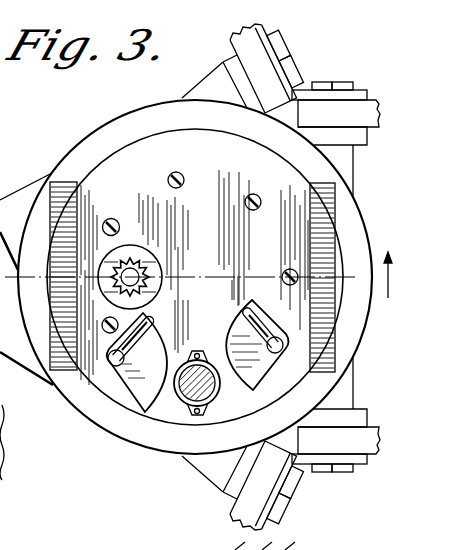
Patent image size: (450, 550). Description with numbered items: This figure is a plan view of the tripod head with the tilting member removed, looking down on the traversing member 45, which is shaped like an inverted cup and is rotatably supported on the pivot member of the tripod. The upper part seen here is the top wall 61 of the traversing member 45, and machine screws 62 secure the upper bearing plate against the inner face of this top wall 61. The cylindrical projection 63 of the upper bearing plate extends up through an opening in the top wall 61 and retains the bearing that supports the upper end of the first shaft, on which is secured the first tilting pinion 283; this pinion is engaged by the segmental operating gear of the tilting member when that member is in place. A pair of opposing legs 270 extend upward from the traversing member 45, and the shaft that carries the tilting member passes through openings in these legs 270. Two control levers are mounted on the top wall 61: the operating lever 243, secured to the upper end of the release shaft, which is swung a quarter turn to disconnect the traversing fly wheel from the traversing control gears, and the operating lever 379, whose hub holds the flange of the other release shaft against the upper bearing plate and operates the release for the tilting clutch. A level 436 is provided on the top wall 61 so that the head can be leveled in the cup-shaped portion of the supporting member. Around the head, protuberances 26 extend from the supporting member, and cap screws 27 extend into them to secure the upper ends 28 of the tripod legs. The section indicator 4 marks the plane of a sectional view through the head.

The section line for FIG. 4 is at (391, 276).
The protuberances 26 is at (206, 78).
The cap screws 27 is at (320, 90).
The upper ends of tripod legs 28 is at (352, 107).
The traversing member 45 is at (117, 128).
The top wall 61 is at (215, 234).
The machine screws 62 is at (250, 195).
The cylindrical projection 63 is at (147, 252).
The operating lever 243 is at (134, 355).
The legs 270 is at (66, 189).
The first tilting pinion 283 is at (130, 262).
The operating lever 379 is at (257, 318).
The level 436 is at (190, 400).